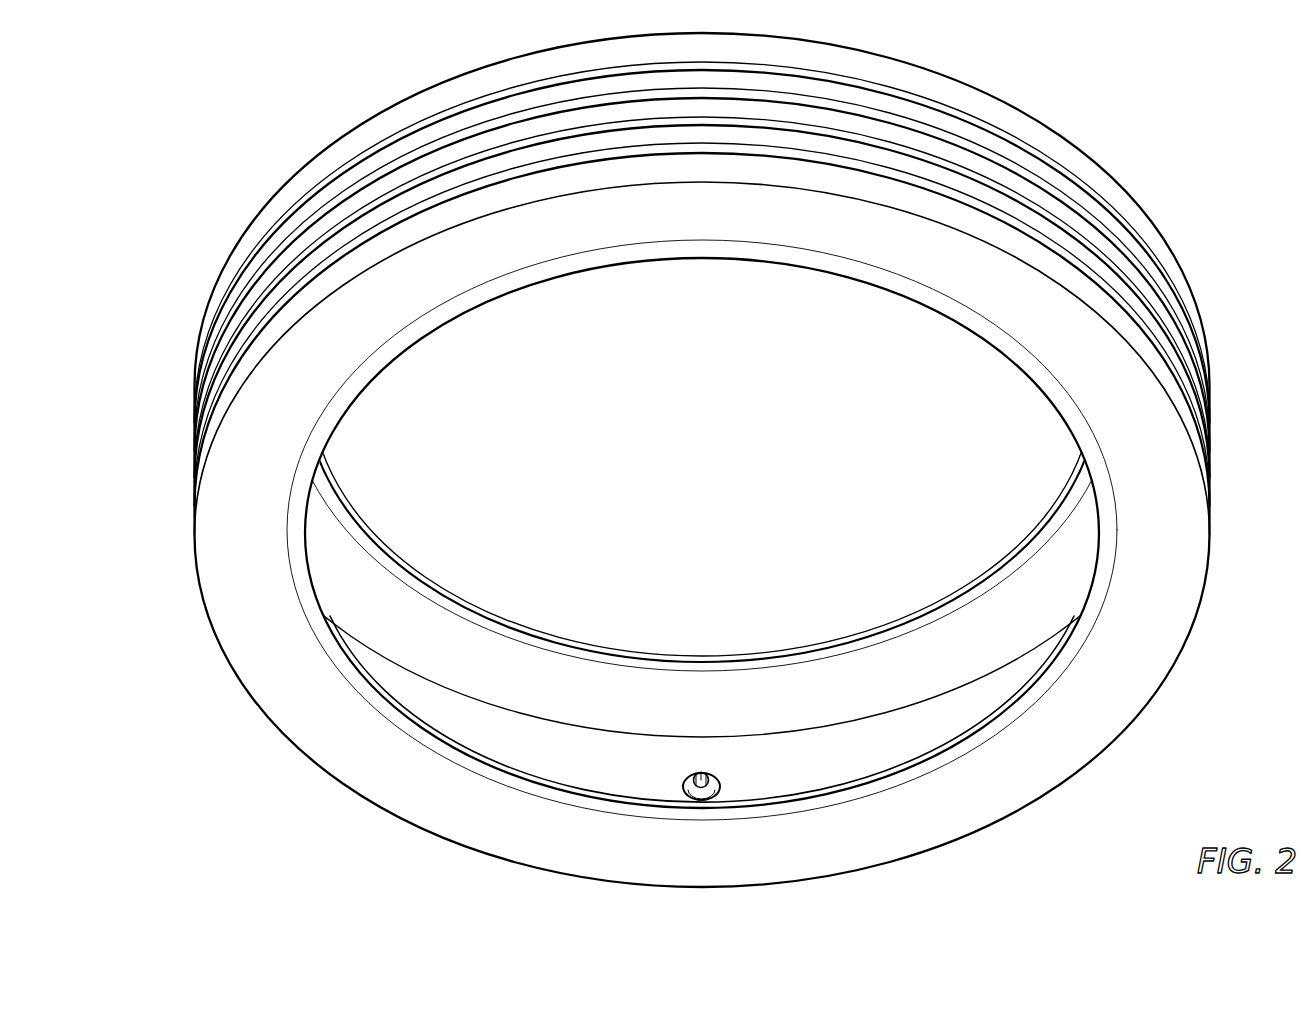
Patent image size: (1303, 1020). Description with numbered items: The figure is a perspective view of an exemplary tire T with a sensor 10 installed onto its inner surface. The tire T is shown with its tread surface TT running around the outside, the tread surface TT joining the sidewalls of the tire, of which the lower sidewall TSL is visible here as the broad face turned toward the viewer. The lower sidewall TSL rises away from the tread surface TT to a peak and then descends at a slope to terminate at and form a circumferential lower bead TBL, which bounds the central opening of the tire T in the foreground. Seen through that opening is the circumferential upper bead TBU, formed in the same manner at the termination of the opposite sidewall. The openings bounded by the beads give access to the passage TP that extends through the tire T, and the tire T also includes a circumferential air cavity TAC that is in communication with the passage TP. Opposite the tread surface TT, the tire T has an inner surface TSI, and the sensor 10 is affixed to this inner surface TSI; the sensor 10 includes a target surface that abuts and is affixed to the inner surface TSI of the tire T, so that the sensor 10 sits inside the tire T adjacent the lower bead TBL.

The tire T is at (202, 110).
The passage TP is at (552, 340).
The tread surface TT is at (938, 148).
The circumferential air cavity TAC is at (407, 642).
The circumferential upper bead TBU is at (458, 602).
The lower sidewall TSL is at (293, 698).
The circumferential lower bead TBL is at (402, 717).
The inner surface TSI is at (788, 792).
The sensor 10 is at (702, 762).